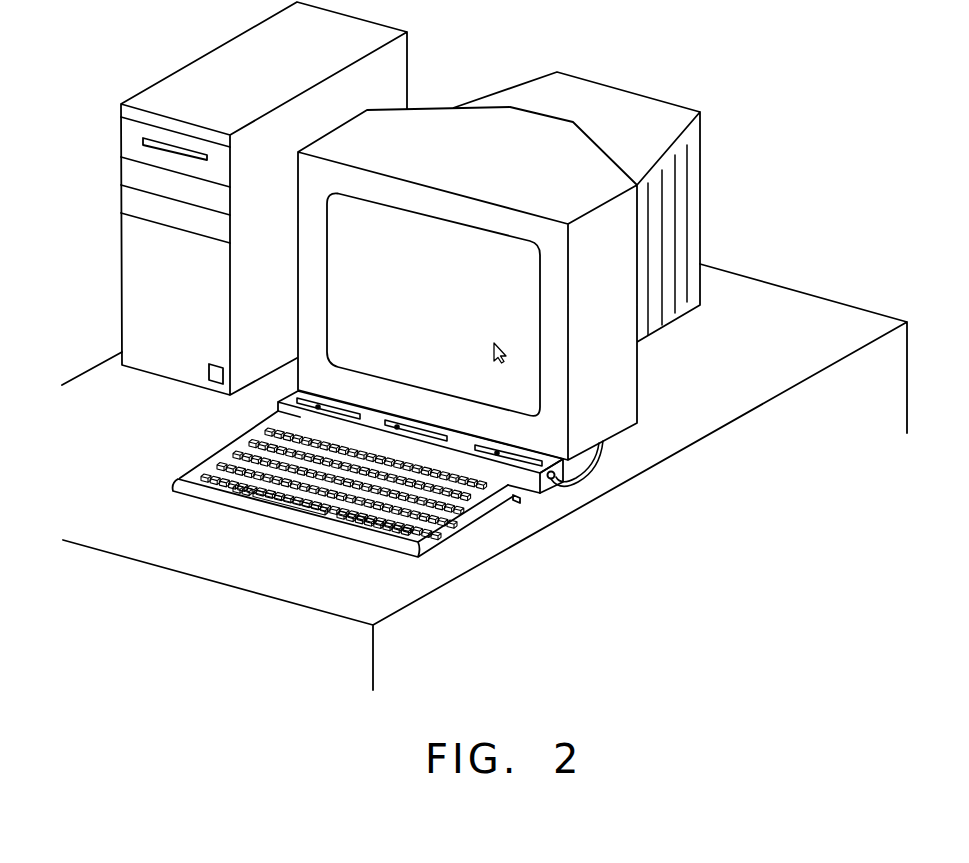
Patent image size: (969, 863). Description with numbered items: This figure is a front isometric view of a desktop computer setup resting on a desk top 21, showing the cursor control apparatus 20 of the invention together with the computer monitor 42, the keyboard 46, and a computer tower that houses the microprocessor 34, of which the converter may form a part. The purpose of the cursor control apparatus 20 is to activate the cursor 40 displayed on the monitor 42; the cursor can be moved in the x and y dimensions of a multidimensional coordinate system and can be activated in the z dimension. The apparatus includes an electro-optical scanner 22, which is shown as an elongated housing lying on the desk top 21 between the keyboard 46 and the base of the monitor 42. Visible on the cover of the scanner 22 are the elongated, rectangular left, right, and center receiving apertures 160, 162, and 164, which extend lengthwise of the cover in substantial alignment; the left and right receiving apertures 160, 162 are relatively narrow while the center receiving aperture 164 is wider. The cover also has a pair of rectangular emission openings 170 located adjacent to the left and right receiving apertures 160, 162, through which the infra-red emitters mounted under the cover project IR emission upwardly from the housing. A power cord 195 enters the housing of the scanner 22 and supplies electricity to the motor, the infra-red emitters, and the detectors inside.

The microprocessor 34 is at (173, 70).
The desk top 21 is at (720, 288).
The monitor 42 is at (612, 420).
The cursor 40 is at (505, 352).
The cursor control apparatus 20 is at (580, 502).
The electro-optical scanner 22 is at (551, 501).
The right receiving aperture 162 is at (537, 489).
The power cord 195 is at (597, 470).
The left receiving aperture 160 is at (300, 392).
The center receiving aperture 164 is at (397, 427).
The emission openings 170 is at (318, 408).
The keyboard 46 is at (382, 548).